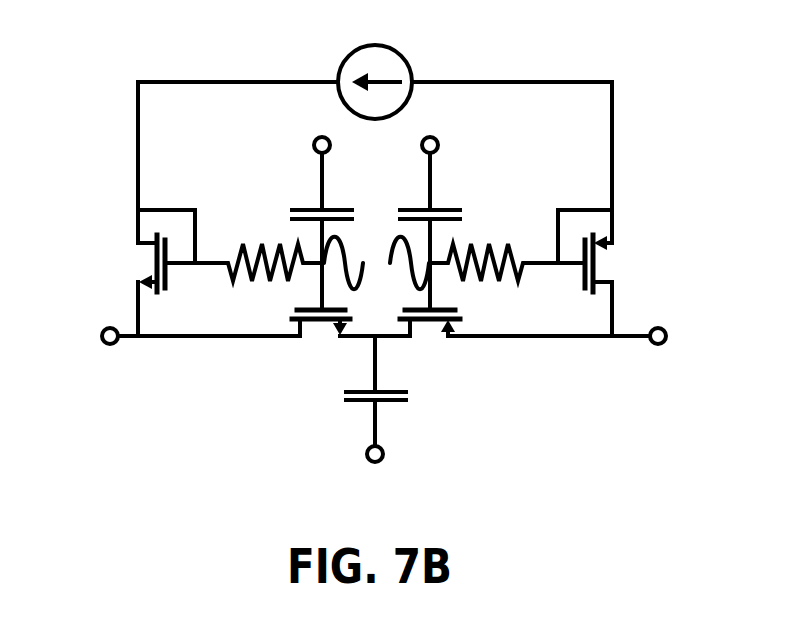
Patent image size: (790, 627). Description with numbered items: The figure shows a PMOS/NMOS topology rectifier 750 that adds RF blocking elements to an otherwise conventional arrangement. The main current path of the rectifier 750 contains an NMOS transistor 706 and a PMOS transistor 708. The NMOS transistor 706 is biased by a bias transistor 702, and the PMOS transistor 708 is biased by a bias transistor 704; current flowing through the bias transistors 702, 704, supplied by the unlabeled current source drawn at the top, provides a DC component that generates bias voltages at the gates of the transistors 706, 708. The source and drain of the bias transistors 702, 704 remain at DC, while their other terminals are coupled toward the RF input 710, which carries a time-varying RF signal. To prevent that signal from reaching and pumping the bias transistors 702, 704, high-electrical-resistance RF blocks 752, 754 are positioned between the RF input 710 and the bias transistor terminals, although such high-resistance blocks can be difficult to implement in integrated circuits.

The rectifier 750 is at (93, 52).
The bias transistor 702 is at (124, 249).
The bias transistor 704 is at (628, 244).
The NMOS transistor 706 is at (311, 354).
The PMOS transistor 708 is at (449, 361).
The RF input 710 is at (300, 145).
The RF block 752 is at (240, 304).
The RF block 754 is at (514, 304).